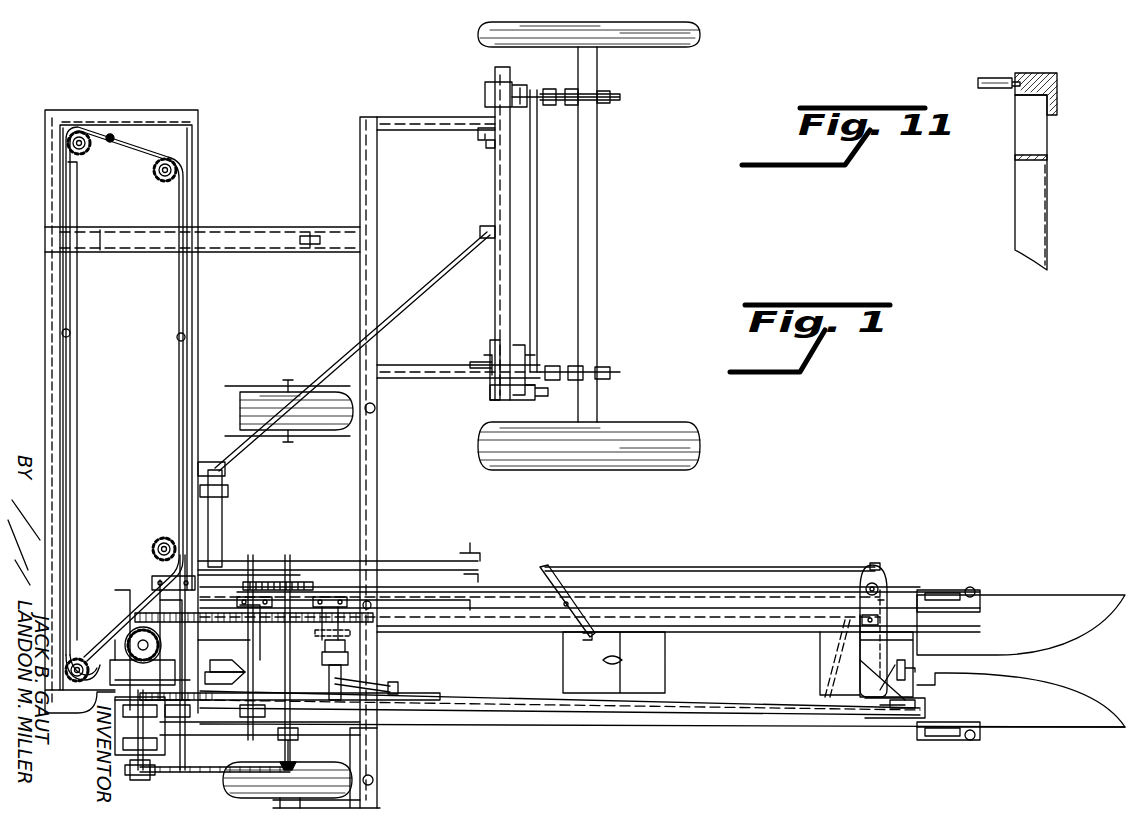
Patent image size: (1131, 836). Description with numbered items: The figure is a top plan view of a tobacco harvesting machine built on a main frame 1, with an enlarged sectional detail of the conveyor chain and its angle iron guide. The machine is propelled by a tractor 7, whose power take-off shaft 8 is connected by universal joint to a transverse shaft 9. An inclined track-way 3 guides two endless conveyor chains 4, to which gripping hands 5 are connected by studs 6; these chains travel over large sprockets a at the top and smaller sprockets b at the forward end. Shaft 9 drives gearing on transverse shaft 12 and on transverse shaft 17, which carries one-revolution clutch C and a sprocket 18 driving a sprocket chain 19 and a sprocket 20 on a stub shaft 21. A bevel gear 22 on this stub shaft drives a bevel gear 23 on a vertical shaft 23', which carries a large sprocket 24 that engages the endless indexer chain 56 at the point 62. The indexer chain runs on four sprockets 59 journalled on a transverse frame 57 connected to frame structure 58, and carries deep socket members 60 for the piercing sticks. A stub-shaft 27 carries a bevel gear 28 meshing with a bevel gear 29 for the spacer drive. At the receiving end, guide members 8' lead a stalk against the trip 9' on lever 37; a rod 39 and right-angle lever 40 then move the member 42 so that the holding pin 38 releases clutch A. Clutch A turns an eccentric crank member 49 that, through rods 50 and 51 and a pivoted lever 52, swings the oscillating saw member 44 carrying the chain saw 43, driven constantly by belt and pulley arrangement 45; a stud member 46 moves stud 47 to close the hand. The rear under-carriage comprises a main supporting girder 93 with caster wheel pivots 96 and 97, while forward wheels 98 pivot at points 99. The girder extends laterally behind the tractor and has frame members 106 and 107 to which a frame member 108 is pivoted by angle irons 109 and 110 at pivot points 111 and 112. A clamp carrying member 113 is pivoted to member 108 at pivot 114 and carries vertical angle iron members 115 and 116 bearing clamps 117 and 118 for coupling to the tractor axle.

In FIG. 1, the main frame 1 is at (695, 727).
In FIG. 1, the track-way 3 is at (740, 615).
In FIG. 11, the track-way 3 is at (1020, 188).
In FIG. 11, the endless conveyor chains 4 is at (1022, 75).
In FIG. 1, the gripping hand 5 is at (668, 660).
In FIG. 11, the stud 6 is at (990, 77).
In FIG. 1, the tractor 7 is at (598, 321).
In FIG. 1, the power take-off shaft 8 is at (355, 348).
In FIG. 1, the guide member 8' is at (1021, 660).
In FIG. 1, the transverse shaft 9 is at (221, 514).
In FIG. 1, the trip 9' is at (914, 680).
In FIG. 1, the transverse shaft 12 is at (255, 640).
In FIG. 1, the transverse shaft 17 is at (285, 683).
In FIG. 1, the sprocket 18 is at (283, 765).
In FIG. 1, the sprocket chain 19 is at (200, 774).
In FIG. 1, the sprocket 20 is at (140, 778).
In FIG. 1, the stub shaft 21 is at (140, 728).
In FIG. 1, the bevel gear 22 is at (165, 650).
In FIG. 1, the bevel gear 23 is at (120, 642).
In FIG. 1, the vertical shaft 23' is at (249, 625).
In FIG. 1, the sprocket 24 is at (118, 660).
In FIG. 1, the stub-shaft 27 is at (228, 684).
In FIG. 1, the bevel gear 28 is at (228, 668).
In FIG. 1, the bevel gear 29 is at (232, 658).
In FIG. 1, the lever 37 is at (928, 710).
In FIG. 1, the holding pin 38 is at (350, 645).
In FIG. 1, the rod 39 is at (832, 722).
In FIG. 1, the right-angle lever 40 is at (400, 688).
In FIG. 1, the horizontally arranged member 42 is at (345, 672).
In FIG. 1, the chain saw 43 is at (889, 570).
In FIG. 1, the oscillating saw member 44 is at (890, 595).
In FIG. 1, the belt and pulley arrangement 45 is at (520, 575).
In FIG. 1, the stud member 46 is at (868, 575).
In FIG. 1, the stud 47 is at (895, 628).
In FIG. 1, the eccentric crank member 49 is at (318, 630).
In FIG. 1, the rod 50 is at (508, 640).
In FIG. 1, the rod 51 is at (693, 567).
In FIG. 1, the lever 52 is at (565, 570).
In FIG. 1, the endless indexer chain 56 is at (186, 374).
In FIG. 1, the transversely extending frame 57 is at (45, 318).
In FIG. 1, the machine frame structure 58 is at (380, 180).
In FIG. 1, the sprocket 59 is at (152, 172).
In FIG. 1, the socket member 60 is at (70, 332).
In FIG. 1, the driving point 62 is at (125, 625).
In FIG. 1, the main supporting girder 93 is at (377, 448).
In FIG. 1, the pivot point 96 is at (374, 780).
In FIG. 1, the pivot point 97 is at (376, 408).
In FIG. 1, the wheel 98 is at (940, 592).
In FIG. 1, the vertical pivot point 99 is at (975, 590).
In FIG. 1, the frame member 106 is at (408, 365).
In FIG. 1, the frame member 107 is at (448, 122).
In FIG. 1, the pivoted frame member 108 is at (497, 186).
In FIG. 1, the angle iron 109 is at (490, 340).
In FIG. 1, the angle iron 110 is at (486, 146).
In FIG. 1, the pivot point 111 is at (484, 358).
In FIG. 1, the pivot point 112 is at (483, 145).
In FIG. 1, the clamp carrying member 113 is at (541, 284).
In FIG. 1, the pivot point 114 is at (538, 396).
In FIG. 1, the angle iron member 115 is at (525, 355).
In FIG. 1, the angle iron member 116 is at (522, 107).
In FIG. 1, the clamp 117 is at (612, 370).
In FIG. 1, the clamp 118 is at (612, 96).
In FIG. 1, the large sprocket a is at (170, 606).
In FIG. 1, the one revolution clutch A is at (312, 668).
In FIG. 1, the small sprocket b is at (885, 725).
In FIG. 1, the one-revolution clutch C is at (298, 736).